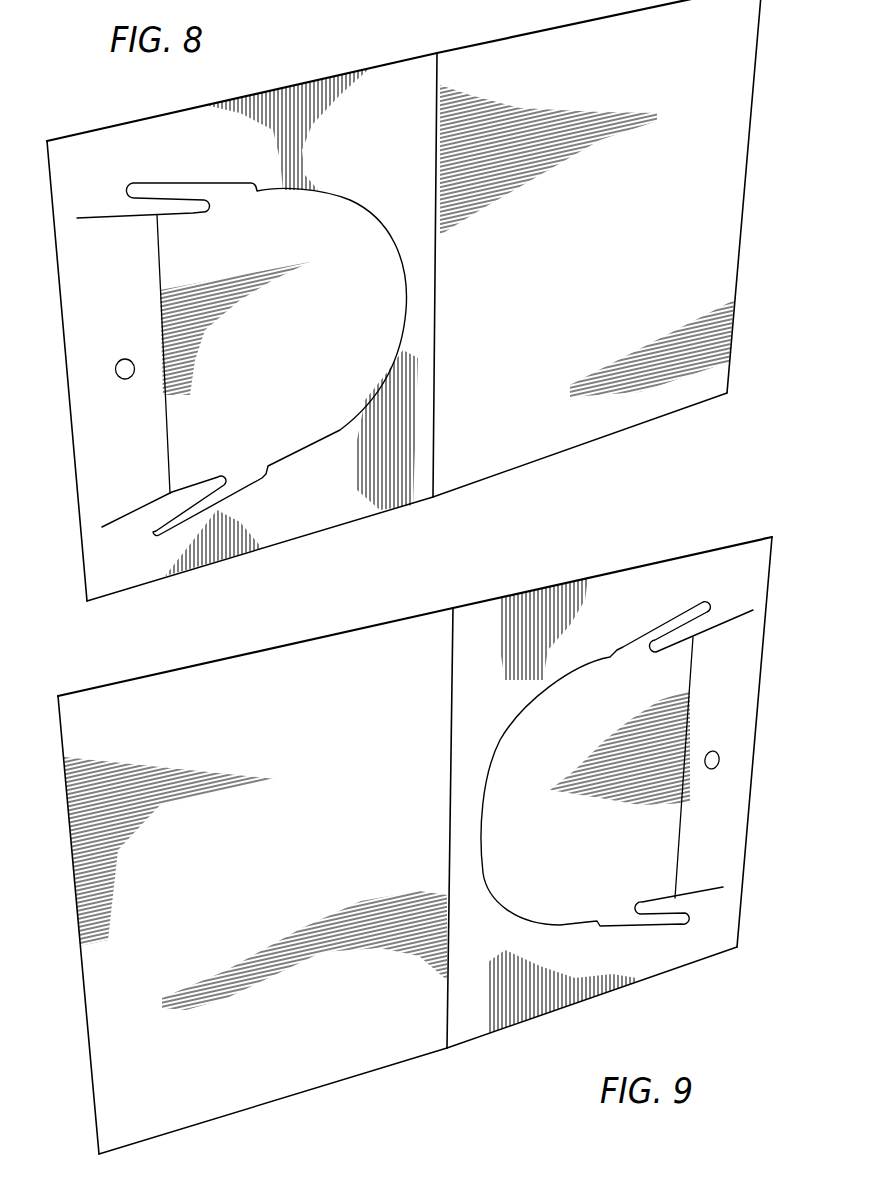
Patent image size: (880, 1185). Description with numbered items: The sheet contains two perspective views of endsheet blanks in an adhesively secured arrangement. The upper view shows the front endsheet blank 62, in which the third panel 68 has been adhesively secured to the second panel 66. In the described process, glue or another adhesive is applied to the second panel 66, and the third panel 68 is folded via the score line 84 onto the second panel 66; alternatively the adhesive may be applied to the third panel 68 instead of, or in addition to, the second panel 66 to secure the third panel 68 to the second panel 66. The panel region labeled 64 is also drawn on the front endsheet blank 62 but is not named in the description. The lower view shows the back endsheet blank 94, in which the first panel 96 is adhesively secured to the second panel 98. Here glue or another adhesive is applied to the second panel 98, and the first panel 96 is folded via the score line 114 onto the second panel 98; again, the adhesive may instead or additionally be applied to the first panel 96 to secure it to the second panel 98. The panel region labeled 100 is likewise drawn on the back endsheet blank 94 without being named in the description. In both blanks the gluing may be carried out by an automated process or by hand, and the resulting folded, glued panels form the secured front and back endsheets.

In FIG. 8, the front endsheet blank 62 is at (347, 42).
In FIG. 8, the second panel 64 is at (602, 425).
In FIG. 8, the second panel 66 is at (253, 422).
In FIG. 8, the third panel 68 is at (156, 143).
In FIG. 8, the score line 84 is at (87, 585).
In FIG. 9, the back endsheet blank 94 is at (454, 586).
In FIG. 9, the first panel 96 is at (485, 1012).
In FIG. 9, the second panel 98 is at (550, 887).
In FIG. 9, the first panel 100 is at (260, 1078).
In FIG. 9, the score line 114 is at (742, 900).